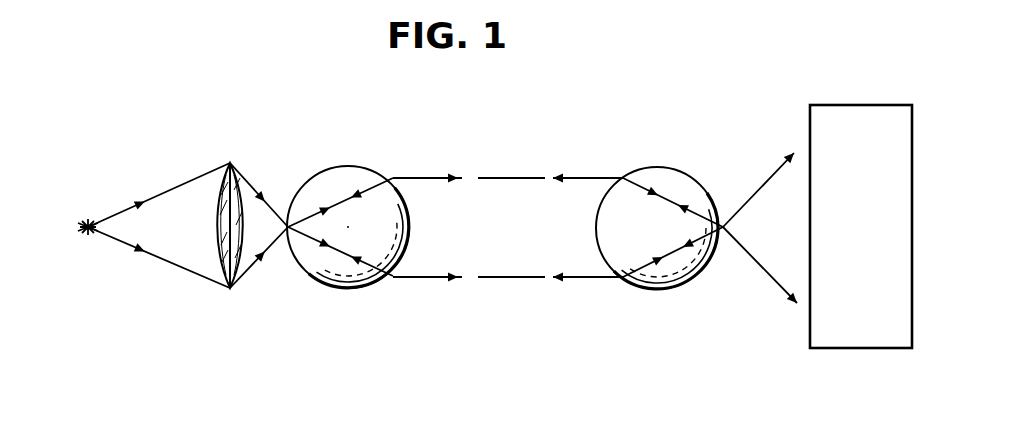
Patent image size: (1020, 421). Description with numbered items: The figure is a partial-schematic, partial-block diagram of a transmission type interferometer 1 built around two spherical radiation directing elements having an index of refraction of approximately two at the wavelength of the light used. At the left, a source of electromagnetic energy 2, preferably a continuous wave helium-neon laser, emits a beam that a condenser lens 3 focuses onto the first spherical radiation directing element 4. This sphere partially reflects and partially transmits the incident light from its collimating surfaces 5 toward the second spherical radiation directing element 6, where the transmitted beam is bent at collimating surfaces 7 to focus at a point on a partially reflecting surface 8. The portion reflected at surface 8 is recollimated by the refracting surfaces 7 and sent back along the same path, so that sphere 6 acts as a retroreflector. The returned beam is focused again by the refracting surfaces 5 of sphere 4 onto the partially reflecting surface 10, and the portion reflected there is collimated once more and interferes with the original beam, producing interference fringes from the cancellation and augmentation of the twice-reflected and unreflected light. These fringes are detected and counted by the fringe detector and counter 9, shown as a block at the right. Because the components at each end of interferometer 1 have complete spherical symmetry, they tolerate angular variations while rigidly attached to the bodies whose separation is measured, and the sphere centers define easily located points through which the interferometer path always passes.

The transmission type interferometer 1 is at (553, 125).
The source of electromagnetic energy 2 is at (88, 220).
The condenser lens 3 is at (228, 165).
The spherical radiation directing element 4 is at (330, 172).
The collimating surfaces 5 is at (393, 178).
The spherical radiation directing element 6 is at (680, 172).
The collimating surfaces 7 is at (623, 177).
The partially reflecting surface 8 is at (728, 227).
The fringe detector and counter 9 is at (843, 349).
The partially reflecting surface 10 is at (288, 224).